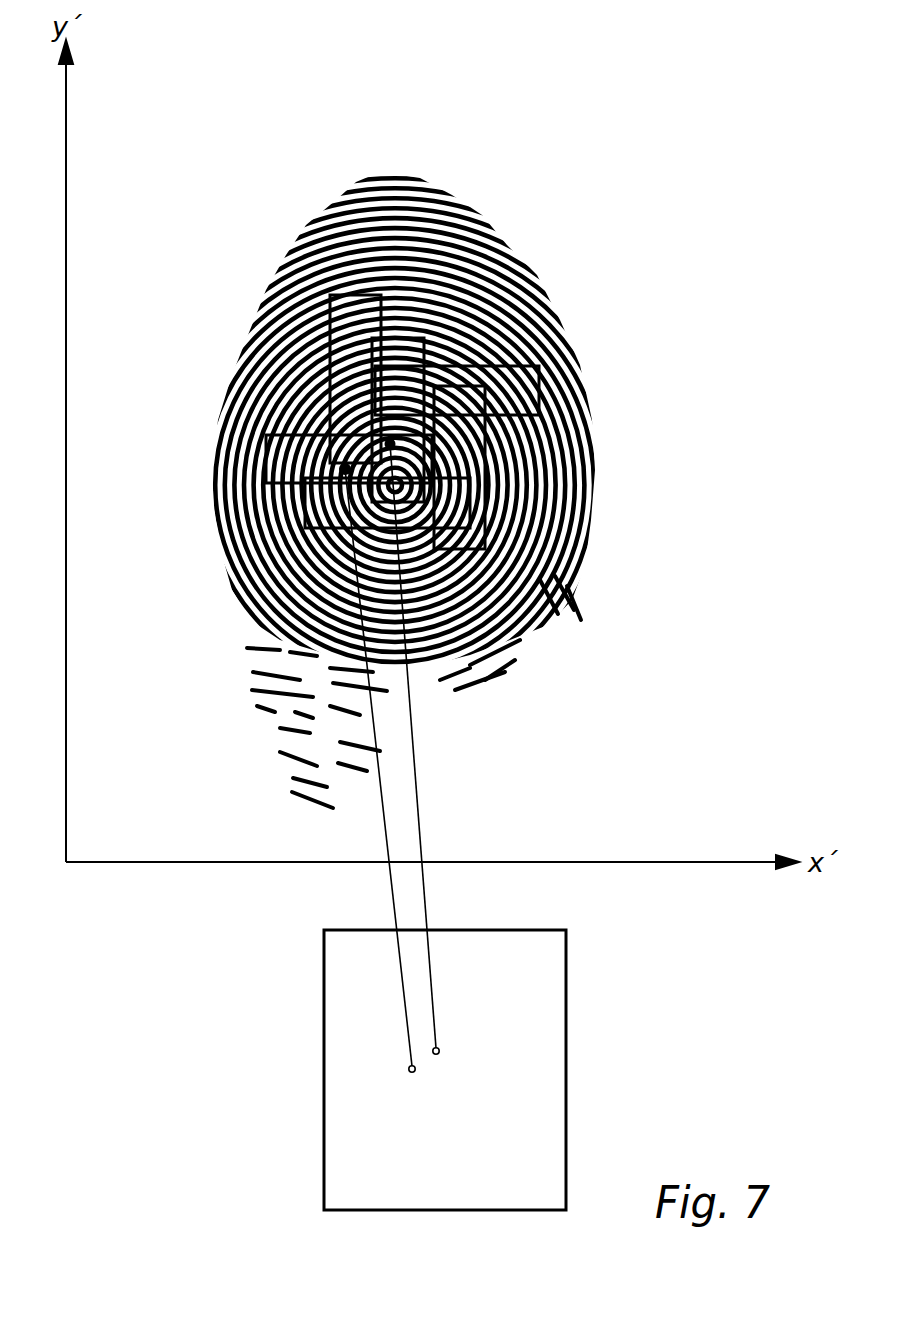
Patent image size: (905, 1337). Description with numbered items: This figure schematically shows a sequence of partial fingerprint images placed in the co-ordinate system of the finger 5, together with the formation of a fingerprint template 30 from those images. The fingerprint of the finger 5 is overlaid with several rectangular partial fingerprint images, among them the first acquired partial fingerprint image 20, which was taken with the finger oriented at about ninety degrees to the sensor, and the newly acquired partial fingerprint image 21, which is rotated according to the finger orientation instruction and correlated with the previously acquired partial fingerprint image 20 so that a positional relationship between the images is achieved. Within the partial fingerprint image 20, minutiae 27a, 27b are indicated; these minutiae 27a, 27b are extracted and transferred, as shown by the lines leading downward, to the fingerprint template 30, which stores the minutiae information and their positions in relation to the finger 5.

The finger 5 is at (503, 311).
The partial fingerprint image 20 is at (264, 463).
The partial fingerprint image 21 is at (343, 294).
The minutia 27a is at (409, 1069).
The minutia 27b is at (436, 1055).
The fingerprint template 30 is at (567, 1018).